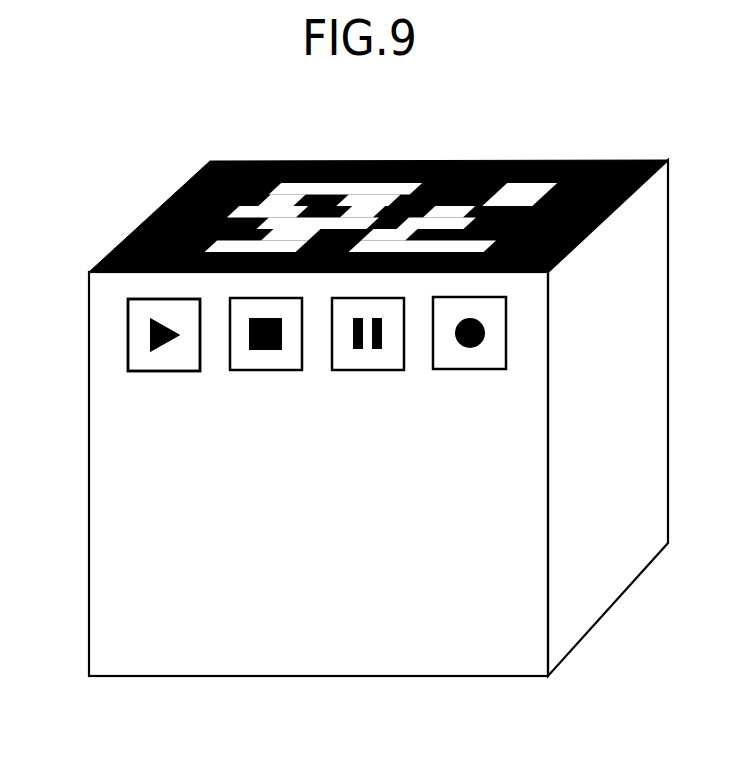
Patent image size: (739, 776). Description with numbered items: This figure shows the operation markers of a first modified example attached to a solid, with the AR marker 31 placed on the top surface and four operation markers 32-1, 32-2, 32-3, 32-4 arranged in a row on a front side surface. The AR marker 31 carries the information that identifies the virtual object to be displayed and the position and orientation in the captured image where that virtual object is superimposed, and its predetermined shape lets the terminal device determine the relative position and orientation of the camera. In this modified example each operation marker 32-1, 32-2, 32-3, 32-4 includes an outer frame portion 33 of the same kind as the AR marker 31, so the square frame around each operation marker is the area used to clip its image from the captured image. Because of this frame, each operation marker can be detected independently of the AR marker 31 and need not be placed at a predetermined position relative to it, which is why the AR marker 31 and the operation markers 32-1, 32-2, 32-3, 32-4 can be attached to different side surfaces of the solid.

The augmented reality marker 31 is at (598, 168).
The outer frame portion 33 is at (128, 328).
The operation marker 32-1 is at (163, 371).
The operation marker 32-2 is at (265, 371).
The operation marker 32-3 is at (367, 371).
The operation marker 32-4 is at (472, 370).